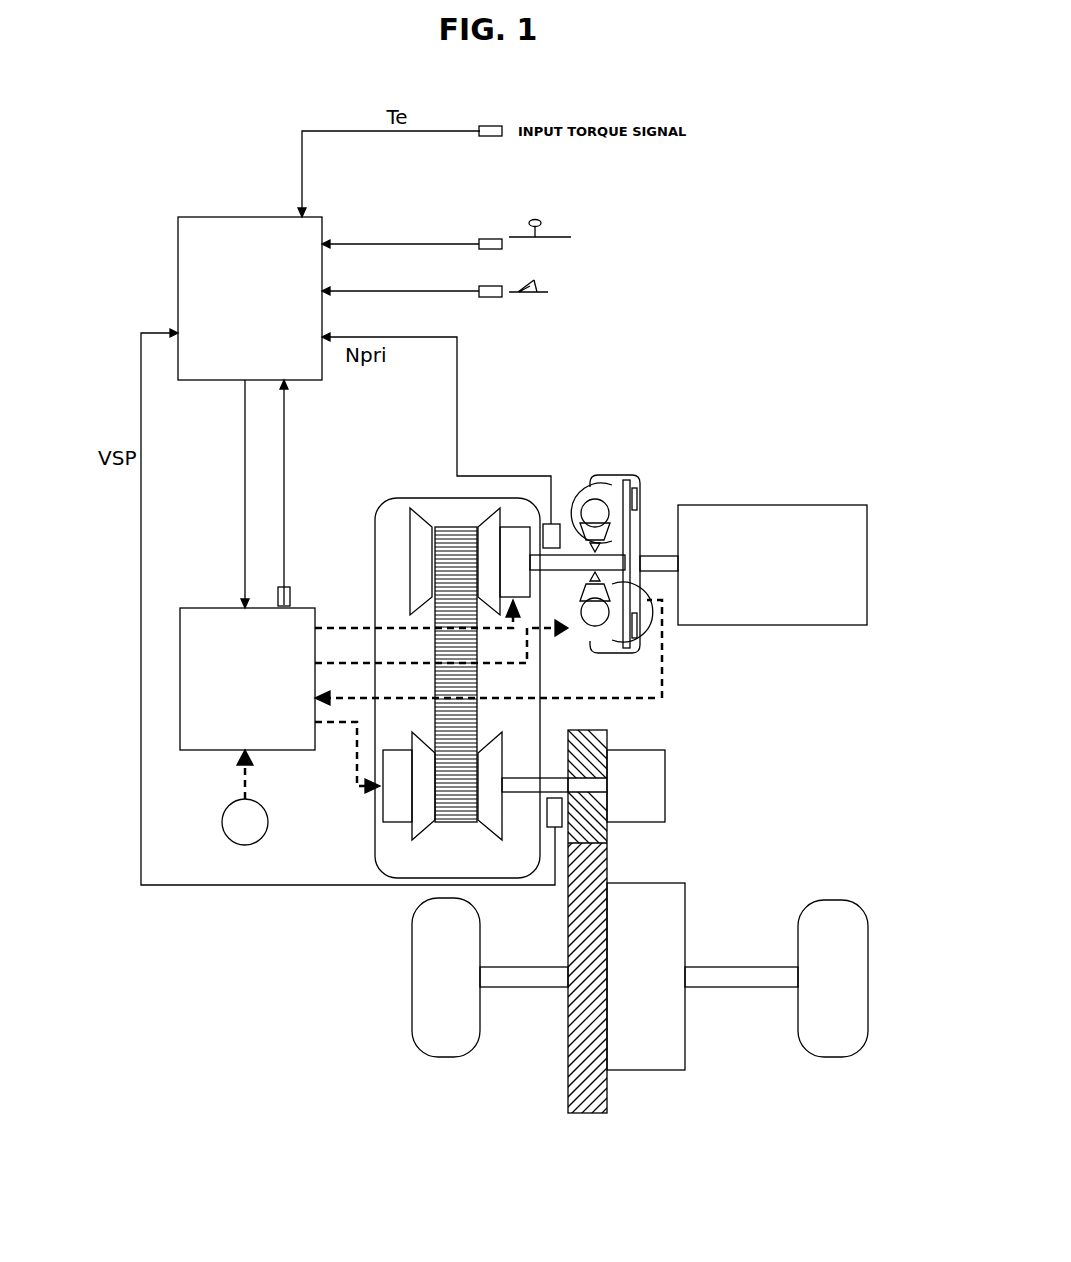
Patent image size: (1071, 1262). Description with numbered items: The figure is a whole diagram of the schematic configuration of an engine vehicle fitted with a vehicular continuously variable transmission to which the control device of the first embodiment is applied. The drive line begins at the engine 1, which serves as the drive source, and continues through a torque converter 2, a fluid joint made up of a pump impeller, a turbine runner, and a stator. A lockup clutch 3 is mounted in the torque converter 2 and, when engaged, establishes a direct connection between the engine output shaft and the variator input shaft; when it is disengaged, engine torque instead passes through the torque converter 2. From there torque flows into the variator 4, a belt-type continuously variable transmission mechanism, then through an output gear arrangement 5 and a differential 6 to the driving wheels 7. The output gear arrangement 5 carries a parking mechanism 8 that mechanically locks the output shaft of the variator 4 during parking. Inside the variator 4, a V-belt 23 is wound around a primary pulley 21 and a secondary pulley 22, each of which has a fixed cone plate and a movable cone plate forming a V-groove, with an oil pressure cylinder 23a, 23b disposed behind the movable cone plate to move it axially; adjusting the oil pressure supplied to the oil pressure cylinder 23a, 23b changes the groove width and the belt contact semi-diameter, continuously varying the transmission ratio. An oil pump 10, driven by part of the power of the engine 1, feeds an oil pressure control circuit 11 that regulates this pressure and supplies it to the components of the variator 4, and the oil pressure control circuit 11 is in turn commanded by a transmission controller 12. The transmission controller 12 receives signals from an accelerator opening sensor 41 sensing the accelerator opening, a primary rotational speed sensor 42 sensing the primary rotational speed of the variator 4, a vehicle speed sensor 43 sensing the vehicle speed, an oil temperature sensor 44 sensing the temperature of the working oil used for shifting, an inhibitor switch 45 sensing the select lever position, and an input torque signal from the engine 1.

The engine 1 is at (850, 526).
The torque converter 2 is at (617, 462).
The lockup clutch 3 is at (640, 499).
The variator 4 is at (410, 497).
The output gear arrangement 5 is at (588, 1116).
The differential 6 is at (660, 1055).
The driving wheels 7 is at (448, 1043).
The parking mechanism 8 is at (650, 770).
The oil pump 10 is at (222, 806).
The oil pressure control circuit 11 is at (201, 621).
The transmission controller 12 is at (250, 232).
The primary pulley 21 is at (422, 557).
The secondary pulley 22 is at (422, 808).
The V-belt 23 is at (455, 530).
The oil pressure cylinder 23a is at (512, 560).
The oil pressure cylinder 23b is at (398, 794).
The accelerator opening sensor 41 is at (494, 297).
The primary rotational speed sensor 42 is at (551, 524).
The vehicle speed sensor 43 is at (562, 810).
The oil temperature sensor 44 is at (290, 594).
The inhibitor switch 45 is at (488, 239).